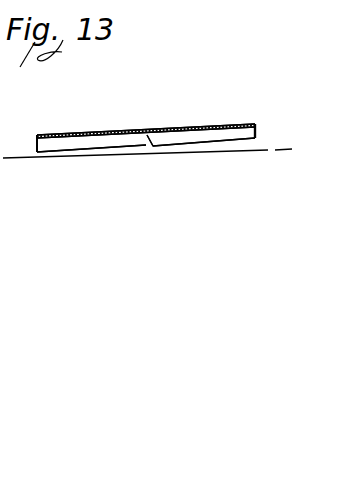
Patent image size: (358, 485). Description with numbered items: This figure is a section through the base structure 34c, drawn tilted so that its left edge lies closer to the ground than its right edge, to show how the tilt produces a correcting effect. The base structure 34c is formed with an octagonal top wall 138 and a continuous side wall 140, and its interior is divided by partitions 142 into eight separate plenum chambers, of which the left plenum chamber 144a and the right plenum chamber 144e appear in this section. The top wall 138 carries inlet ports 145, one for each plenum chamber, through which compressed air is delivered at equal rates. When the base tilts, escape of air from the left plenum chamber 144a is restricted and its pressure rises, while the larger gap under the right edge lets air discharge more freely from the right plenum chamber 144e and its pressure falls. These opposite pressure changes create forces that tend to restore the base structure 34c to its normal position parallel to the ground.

The base structure 34c is at (246, 120).
The top wall 138 is at (237, 125).
The inlet ports 145 is at (178, 128).
The side wall 140 is at (35, 151).
The plenum chamber 144a is at (95, 145).
The plenum chamber 144e is at (225, 140).
The partitions 142 is at (147, 133).